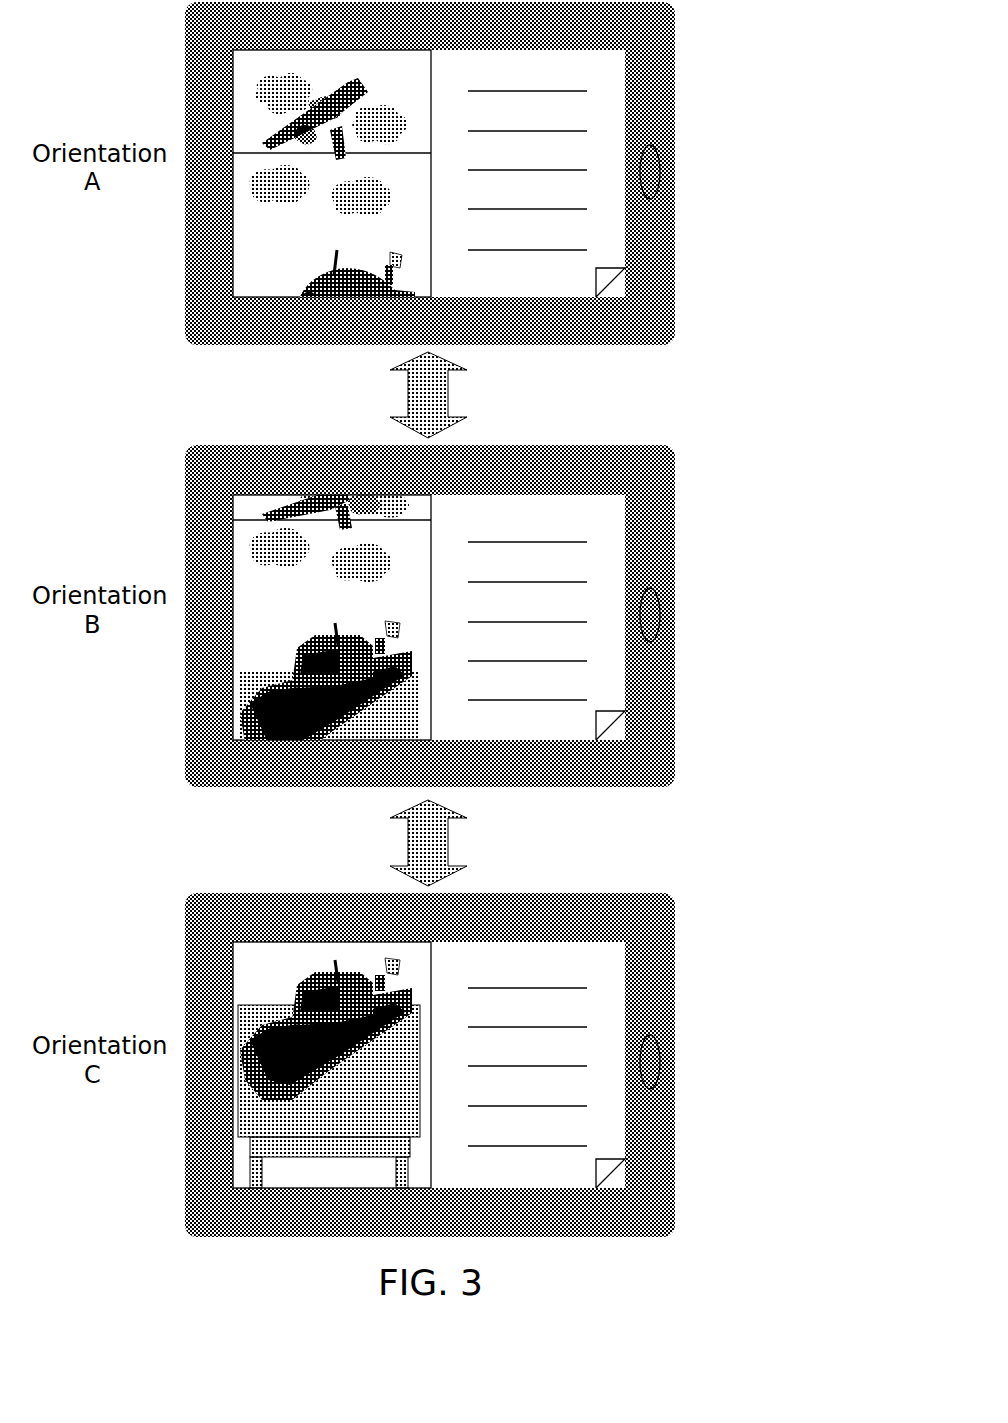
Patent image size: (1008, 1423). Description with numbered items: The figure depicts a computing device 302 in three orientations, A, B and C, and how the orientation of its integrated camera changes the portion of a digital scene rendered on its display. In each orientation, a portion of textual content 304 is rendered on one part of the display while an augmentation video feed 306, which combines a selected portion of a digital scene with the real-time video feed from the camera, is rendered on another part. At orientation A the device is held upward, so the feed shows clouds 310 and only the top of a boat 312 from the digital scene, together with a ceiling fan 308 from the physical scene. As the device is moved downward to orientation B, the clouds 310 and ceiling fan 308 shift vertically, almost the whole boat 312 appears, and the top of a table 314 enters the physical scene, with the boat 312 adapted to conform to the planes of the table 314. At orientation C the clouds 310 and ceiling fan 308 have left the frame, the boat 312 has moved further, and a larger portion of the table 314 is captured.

The computing device 302 is at (673, 67).
The portion of textual content 304 is at (605, 246).
The augmentation video feed 306 is at (250, 66).
The ceiling fan 308 is at (362, 93).
The clouds 310 is at (381, 109).
The boat 312 is at (358, 268).
The table 314 is at (262, 670).